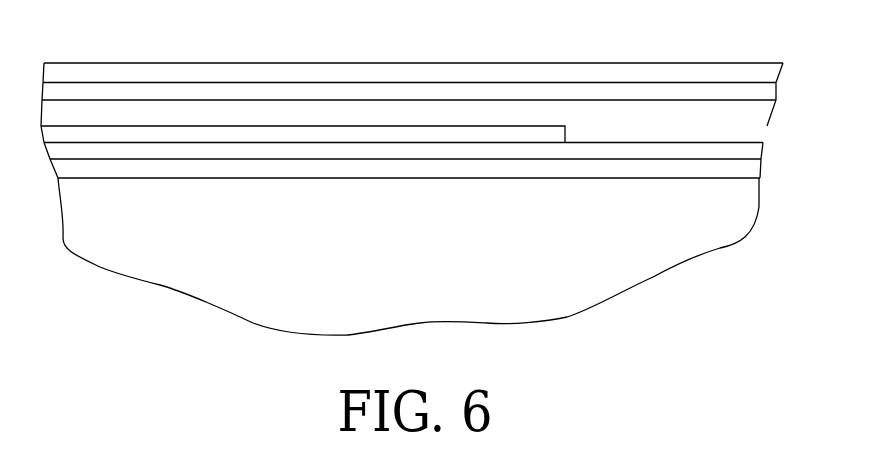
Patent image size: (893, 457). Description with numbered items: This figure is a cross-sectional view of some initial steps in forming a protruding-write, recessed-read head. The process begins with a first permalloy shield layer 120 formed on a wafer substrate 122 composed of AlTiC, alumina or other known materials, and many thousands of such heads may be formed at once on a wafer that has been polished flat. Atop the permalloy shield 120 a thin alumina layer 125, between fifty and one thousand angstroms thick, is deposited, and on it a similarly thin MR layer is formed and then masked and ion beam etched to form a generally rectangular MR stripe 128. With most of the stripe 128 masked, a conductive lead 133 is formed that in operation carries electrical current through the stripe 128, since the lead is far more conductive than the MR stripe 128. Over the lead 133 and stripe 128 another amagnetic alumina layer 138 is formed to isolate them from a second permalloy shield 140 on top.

The first permalloy shield layer 120 is at (583, 180).
The wafer substrate 122 is at (384, 280).
The alumina layer 125 is at (518, 160).
The MR stripe 128 is at (154, 142).
The conductive lead 133 is at (628, 132).
The amagnetic alumina layer 138 is at (562, 82).
The second permalloy shield 140 is at (416, 63).